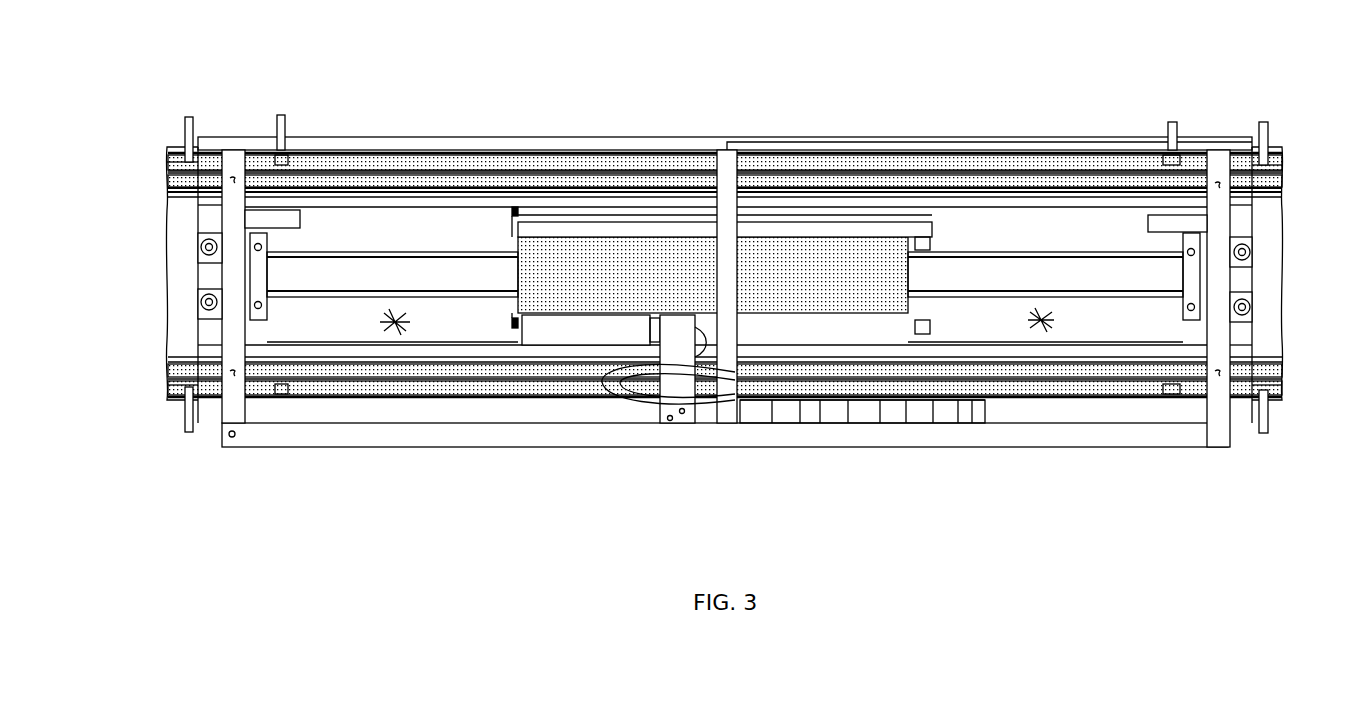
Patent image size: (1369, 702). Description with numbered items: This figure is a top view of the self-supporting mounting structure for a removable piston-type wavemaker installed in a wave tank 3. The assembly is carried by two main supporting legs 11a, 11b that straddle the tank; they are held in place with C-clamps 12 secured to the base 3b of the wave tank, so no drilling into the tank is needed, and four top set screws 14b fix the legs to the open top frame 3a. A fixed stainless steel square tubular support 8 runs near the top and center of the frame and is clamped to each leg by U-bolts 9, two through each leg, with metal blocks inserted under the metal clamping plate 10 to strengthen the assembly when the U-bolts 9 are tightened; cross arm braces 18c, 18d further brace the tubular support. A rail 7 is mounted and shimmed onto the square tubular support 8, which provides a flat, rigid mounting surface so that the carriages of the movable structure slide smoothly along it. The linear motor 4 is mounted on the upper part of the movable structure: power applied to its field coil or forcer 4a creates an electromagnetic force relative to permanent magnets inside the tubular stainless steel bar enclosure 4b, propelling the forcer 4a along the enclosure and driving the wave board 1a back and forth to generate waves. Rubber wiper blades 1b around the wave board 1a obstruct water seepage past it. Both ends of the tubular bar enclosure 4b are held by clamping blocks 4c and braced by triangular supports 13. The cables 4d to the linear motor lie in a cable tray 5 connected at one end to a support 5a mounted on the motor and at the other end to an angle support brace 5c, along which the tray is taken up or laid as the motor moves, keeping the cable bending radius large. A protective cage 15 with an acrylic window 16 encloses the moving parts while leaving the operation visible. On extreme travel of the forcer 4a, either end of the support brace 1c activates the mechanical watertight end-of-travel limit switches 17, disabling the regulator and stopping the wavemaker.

The wave board 1a is at (520, 240).
The rubber wiper blades 1b is at (510, 210).
The support brace 1c is at (920, 232).
The wave tank 3 is at (140, 300).
The top frame 3a is at (200, 178).
The base 3b is at (170, 158).
The linear motor 4 is at (607, 233).
The field coil (forcer) 4a is at (662, 268).
The tubular stainless steel bar enclosure 4b is at (1010, 280).
The clamping blocks 4c is at (263, 274).
The cables to the linear motor 4d is at (610, 392).
The cable tray 5 is at (843, 427).
The support 5a is at (660, 420).
The angle support brace 5c is at (1023, 408).
The rail 7 is at (1085, 262).
The square tubular support 8 is at (1068, 300).
The U-bolts 9 is at (197, 300).
The metal clamping plate 10 is at (250, 246).
The supporting leg 11a is at (215, 340).
The supporting leg 11b is at (1240, 340).
The C-clamps 12 is at (195, 117).
The triangular supports 13 is at (200, 276).
The top set screws 14b is at (192, 194).
The protective cage 15 is at (1094, 438).
The acrylic window 16 is at (380, 322).
The end-of-travel limit switches 17 is at (295, 222).
The cross arm brace 18c is at (436, 138).
The cross arm brace 18d is at (832, 143).